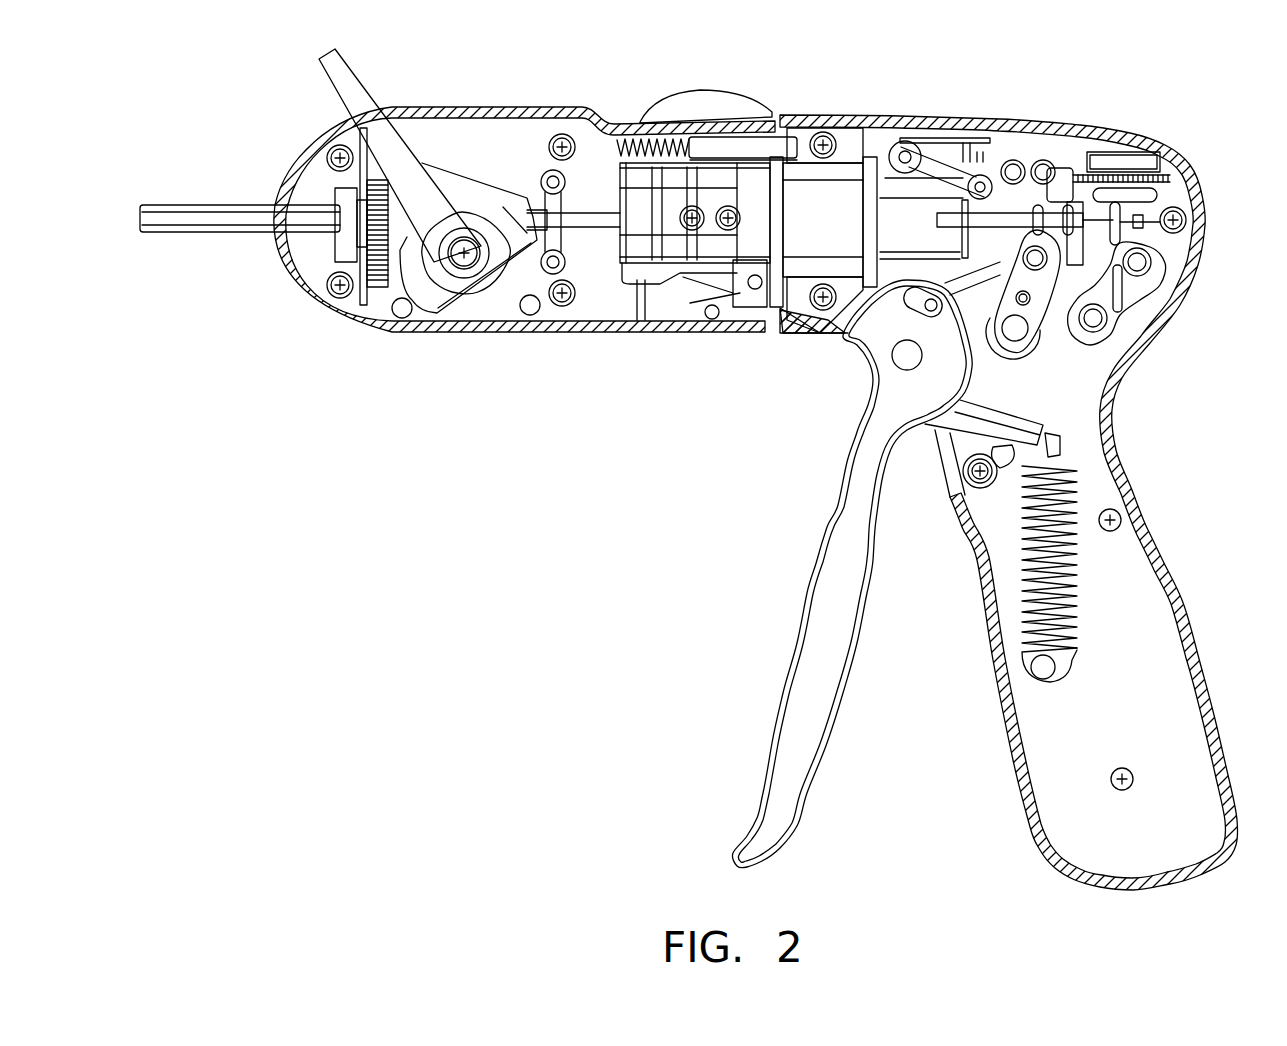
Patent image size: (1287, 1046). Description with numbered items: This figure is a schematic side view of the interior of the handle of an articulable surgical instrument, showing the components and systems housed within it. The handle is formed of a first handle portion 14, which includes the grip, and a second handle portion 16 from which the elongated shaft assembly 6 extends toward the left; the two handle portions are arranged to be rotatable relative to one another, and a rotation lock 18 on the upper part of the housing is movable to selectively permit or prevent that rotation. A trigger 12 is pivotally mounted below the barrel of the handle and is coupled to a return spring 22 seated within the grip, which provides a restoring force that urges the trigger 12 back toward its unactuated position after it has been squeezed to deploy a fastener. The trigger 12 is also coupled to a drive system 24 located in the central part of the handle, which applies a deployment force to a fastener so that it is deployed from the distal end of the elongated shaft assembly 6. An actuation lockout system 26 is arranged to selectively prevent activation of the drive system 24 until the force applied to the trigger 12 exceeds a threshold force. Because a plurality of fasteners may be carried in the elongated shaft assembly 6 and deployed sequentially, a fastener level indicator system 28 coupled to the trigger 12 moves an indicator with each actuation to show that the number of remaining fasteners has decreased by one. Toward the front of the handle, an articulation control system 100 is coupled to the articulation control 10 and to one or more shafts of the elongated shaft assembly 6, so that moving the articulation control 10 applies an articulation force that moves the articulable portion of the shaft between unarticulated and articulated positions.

The elongated shaft assembly 6 is at (223, 230).
The articulation control 10 is at (350, 82).
The articulation control system 100 is at (462, 160).
The rotation lock 18 is at (713, 100).
The drive system 24 is at (793, 208).
The first handle portion 14 is at (1000, 118).
The second handle portion 16 is at (710, 330).
The actuation lockout system 26 is at (1008, 206).
The fastener level indicator system 28 is at (1162, 160).
The trigger 12 is at (817, 560).
The return spring 22 is at (1073, 572).